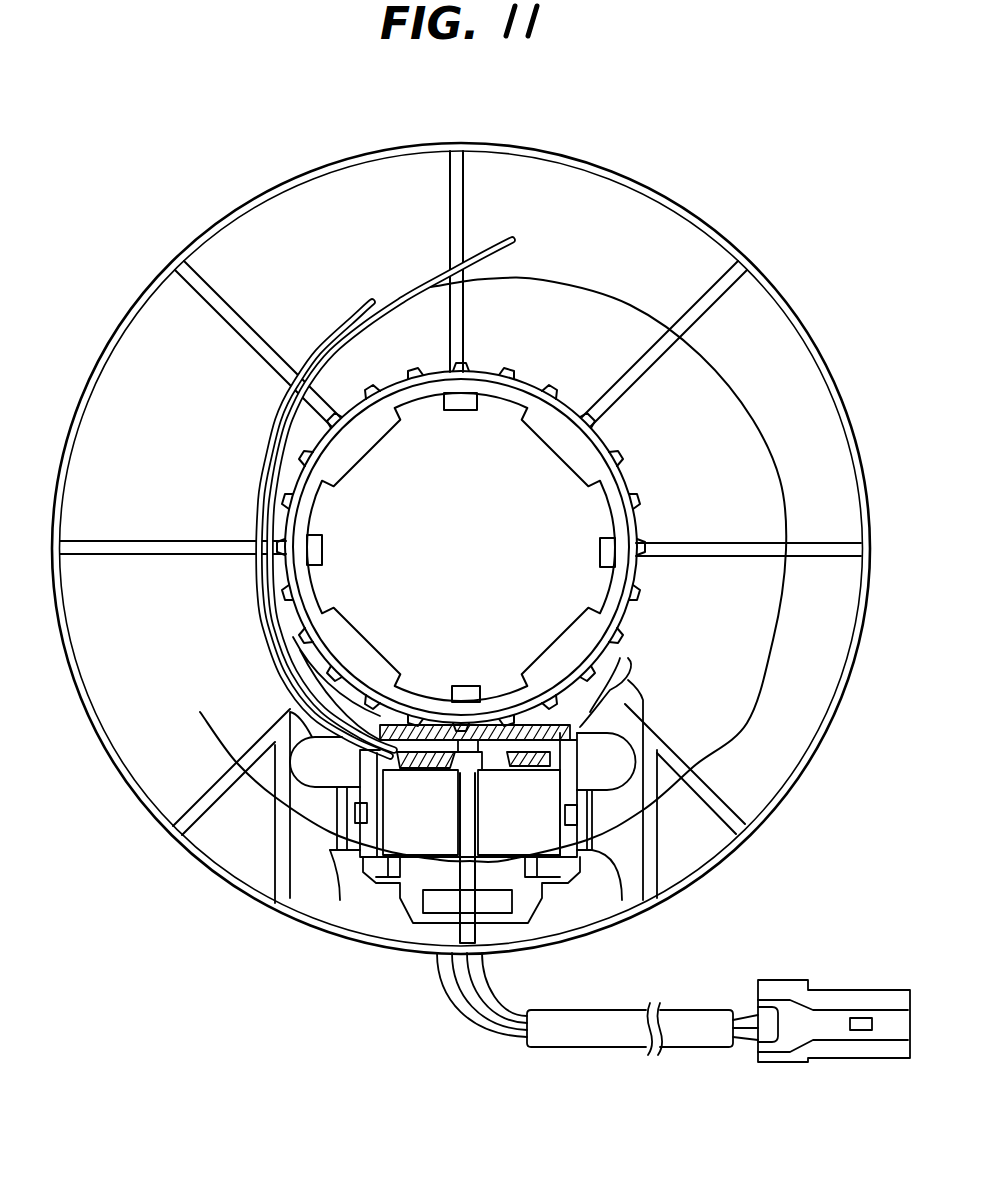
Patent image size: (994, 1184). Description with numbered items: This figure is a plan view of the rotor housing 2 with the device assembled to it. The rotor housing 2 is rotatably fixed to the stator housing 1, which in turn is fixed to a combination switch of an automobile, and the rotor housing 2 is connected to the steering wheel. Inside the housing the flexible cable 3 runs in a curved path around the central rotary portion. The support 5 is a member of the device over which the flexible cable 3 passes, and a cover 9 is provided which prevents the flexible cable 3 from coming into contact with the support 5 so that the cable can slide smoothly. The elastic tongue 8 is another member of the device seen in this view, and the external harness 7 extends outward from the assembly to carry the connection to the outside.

The stator housing 1 is at (421, 780).
The rotor housing 2 is at (665, 227).
The flexible cable 3 is at (552, 283).
The support 5 is at (610, 773).
The external harness 7 is at (598, 1047).
The elastic tongue 8 is at (366, 304).
The cover 9 is at (530, 810).